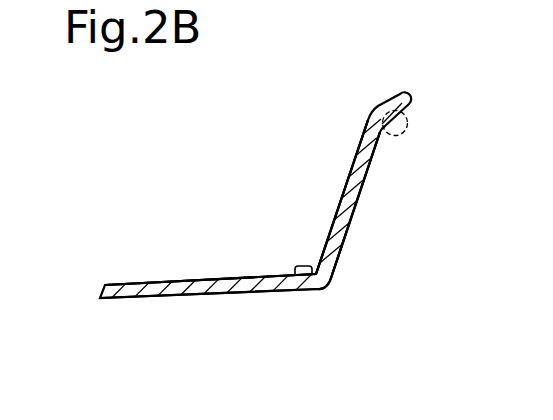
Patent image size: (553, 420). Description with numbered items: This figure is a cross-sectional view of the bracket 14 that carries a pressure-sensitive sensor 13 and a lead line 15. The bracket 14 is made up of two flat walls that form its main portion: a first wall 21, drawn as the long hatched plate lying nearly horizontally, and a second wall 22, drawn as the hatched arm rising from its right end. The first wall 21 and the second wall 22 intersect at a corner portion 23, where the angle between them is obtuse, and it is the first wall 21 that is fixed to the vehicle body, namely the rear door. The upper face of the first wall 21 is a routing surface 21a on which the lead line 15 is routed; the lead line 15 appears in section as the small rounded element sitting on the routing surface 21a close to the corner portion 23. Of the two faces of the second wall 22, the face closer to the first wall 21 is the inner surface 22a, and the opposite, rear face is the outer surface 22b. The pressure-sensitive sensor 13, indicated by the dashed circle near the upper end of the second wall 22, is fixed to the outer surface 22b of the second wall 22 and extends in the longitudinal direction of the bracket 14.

The pressure-sensitive sensor 13 is at (407, 122).
The bracket 14 is at (243, 293).
The lead line 15 is at (303, 266).
The first wall 21 is at (164, 283).
The routing surface 21a is at (228, 281).
The second wall 22 is at (350, 203).
The inner surface 22a is at (351, 172).
The outer surface 22b is at (367, 172).
The corner portion 23 is at (322, 286).